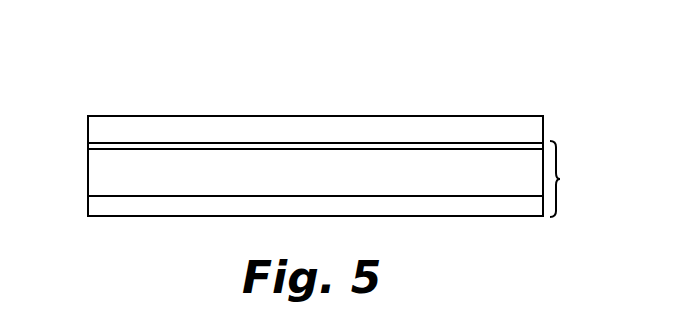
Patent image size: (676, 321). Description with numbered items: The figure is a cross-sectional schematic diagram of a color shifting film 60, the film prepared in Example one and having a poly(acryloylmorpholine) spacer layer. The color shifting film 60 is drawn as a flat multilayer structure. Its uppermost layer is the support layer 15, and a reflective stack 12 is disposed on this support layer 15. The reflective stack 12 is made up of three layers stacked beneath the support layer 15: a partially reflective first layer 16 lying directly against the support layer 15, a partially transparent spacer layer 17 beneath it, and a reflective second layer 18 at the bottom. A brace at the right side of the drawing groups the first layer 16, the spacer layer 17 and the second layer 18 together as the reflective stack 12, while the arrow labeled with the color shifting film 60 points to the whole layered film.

The color shifting film 60 is at (168, 70).
The support layer 15 is at (88, 126).
The partially reflective first layer 16 is at (88, 147).
The partially transparent spacer layer 17 is at (88, 173).
The reflective second layer 18 is at (88, 206).
The reflective stack 12 is at (574, 179).